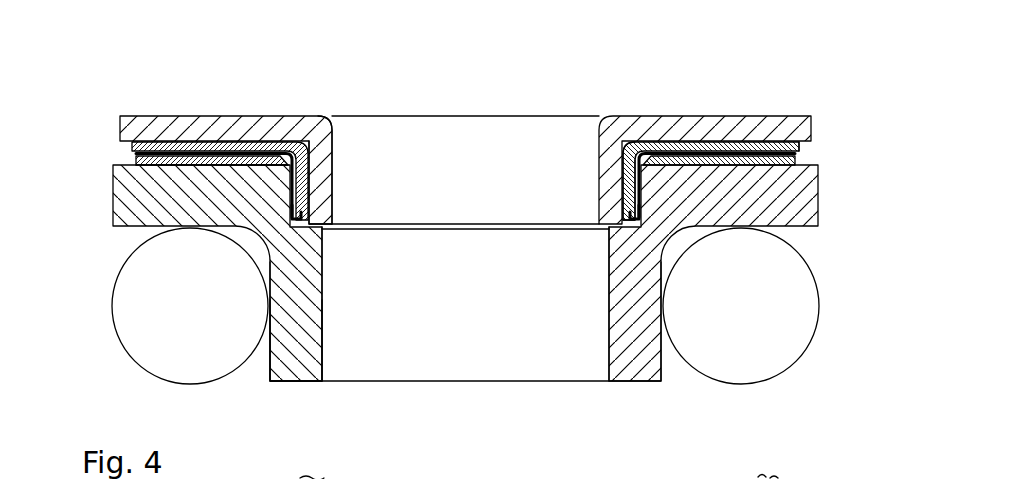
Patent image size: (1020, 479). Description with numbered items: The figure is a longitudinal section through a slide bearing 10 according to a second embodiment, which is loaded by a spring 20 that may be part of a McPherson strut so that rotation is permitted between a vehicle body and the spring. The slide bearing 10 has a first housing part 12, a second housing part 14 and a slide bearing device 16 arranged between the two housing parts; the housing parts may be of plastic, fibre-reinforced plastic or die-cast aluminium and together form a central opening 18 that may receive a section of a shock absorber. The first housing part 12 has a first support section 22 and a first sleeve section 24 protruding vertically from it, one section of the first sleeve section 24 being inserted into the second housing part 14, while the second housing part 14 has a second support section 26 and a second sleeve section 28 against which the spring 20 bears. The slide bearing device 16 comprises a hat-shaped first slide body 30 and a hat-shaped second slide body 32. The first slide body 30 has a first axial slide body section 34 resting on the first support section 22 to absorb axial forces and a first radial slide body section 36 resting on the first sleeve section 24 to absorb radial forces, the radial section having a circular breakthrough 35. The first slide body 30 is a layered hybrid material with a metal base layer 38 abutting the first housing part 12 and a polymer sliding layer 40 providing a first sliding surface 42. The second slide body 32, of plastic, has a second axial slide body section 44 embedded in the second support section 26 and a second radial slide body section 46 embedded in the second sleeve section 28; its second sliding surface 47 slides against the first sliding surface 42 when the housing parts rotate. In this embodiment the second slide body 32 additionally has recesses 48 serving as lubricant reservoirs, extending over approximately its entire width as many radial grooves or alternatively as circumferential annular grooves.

The slide bearing 10 is at (672, 70).
The first housing part 12 is at (184, 118).
The second housing part 14 is at (284, 372).
The slide bearing device 16 is at (120, 147).
The central opening 18 is at (590, 362).
The spring 20 is at (773, 362).
The first support section 22 is at (228, 140).
The first sleeve section 24 is at (331, 174).
The second support section 26 is at (168, 208).
The second sleeve section 28 is at (309, 291).
The first slide body 30 is at (273, 143).
The second slide body 32 is at (178, 162).
The first axial slide body section 34 is at (712, 158).
The circular breakthrough 35 is at (645, 183).
The first radial slide body section 36 is at (640, 157).
The base layer 38 is at (765, 160).
The sliding layer 40 is at (800, 158).
The first sliding surface 42 is at (660, 150).
The second axial slide body section 44 is at (208, 164).
The second radial slide body section 46 is at (300, 190).
The second sliding surface 47 is at (795, 215).
The recesses 48 is at (690, 160).